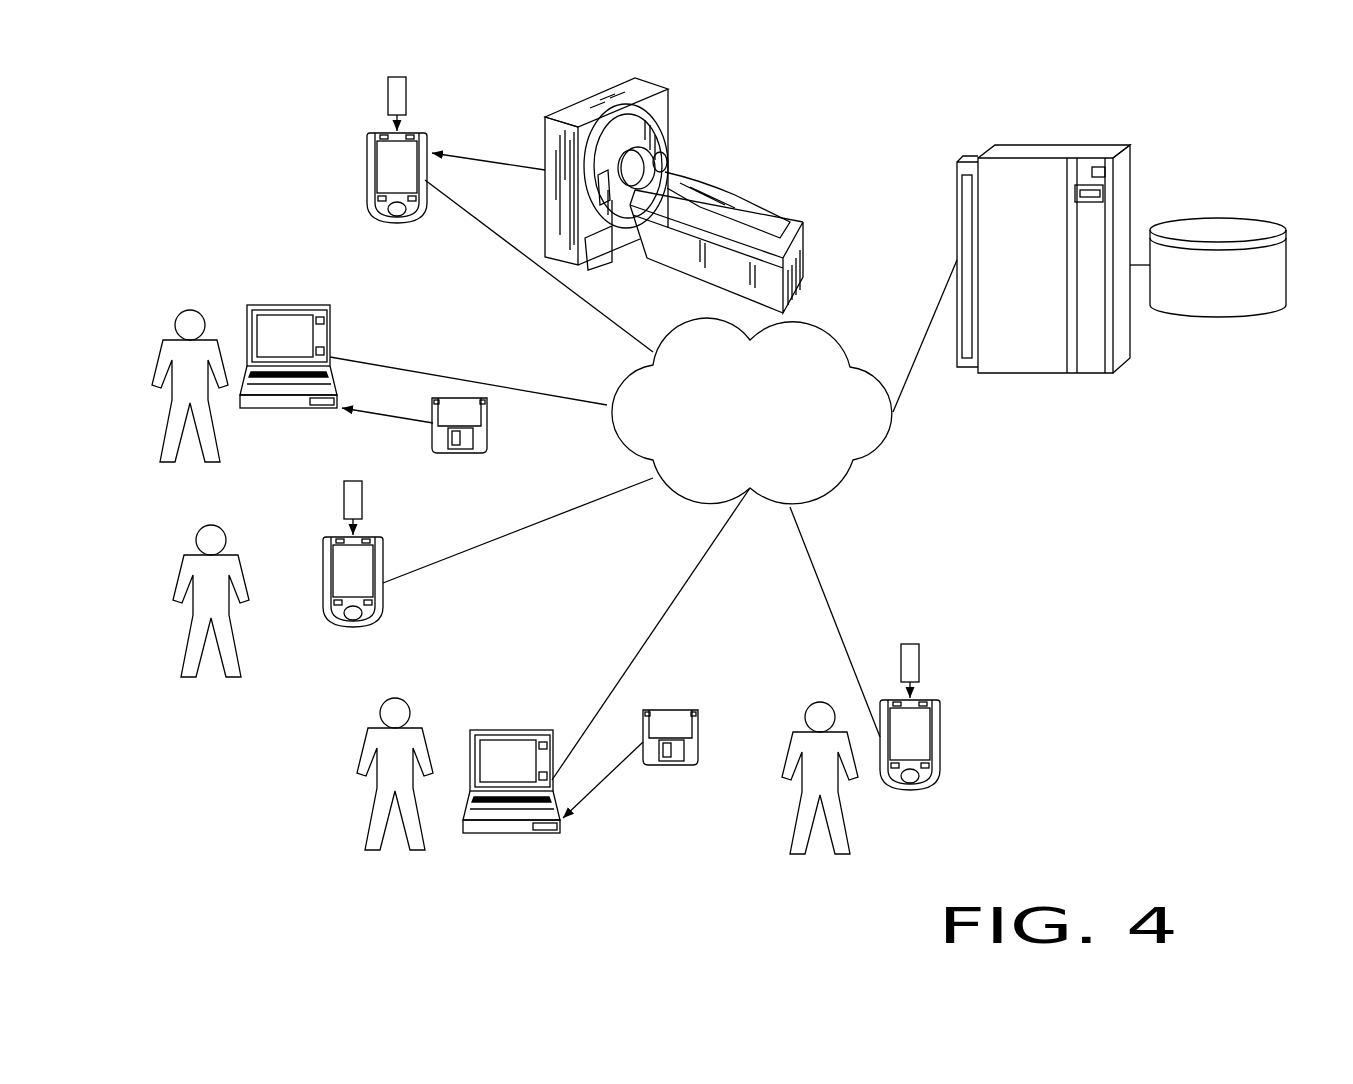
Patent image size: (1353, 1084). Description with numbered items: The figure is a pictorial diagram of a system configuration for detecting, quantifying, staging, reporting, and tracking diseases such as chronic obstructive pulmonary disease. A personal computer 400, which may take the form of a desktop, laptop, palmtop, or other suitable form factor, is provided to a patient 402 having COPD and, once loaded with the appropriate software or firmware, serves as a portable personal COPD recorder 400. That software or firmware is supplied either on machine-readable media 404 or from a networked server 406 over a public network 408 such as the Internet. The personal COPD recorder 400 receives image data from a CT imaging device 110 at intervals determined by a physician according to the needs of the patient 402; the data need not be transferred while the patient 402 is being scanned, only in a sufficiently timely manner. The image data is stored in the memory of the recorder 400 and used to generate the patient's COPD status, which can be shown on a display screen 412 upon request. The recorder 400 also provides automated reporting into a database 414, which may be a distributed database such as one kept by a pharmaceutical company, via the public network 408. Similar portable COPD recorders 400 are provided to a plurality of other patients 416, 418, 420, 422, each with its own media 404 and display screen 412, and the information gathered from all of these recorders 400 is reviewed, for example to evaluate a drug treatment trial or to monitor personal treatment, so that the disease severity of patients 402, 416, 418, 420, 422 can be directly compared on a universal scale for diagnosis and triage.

The CT imaging device 110 is at (603, 92).
The personal computer 400 is at (367, 185).
The patient 402 is at (677, 197).
The machine-readable media 404 is at (387, 88).
The networked server 406 is at (1123, 337).
The public network 408 is at (813, 320).
The display screen 412 is at (390, 160).
The database 414 is at (1213, 217).
The patient 416 is at (187, 383).
The patient 418 is at (210, 590).
The patient 420 is at (388, 757).
The patient 422 is at (822, 775).